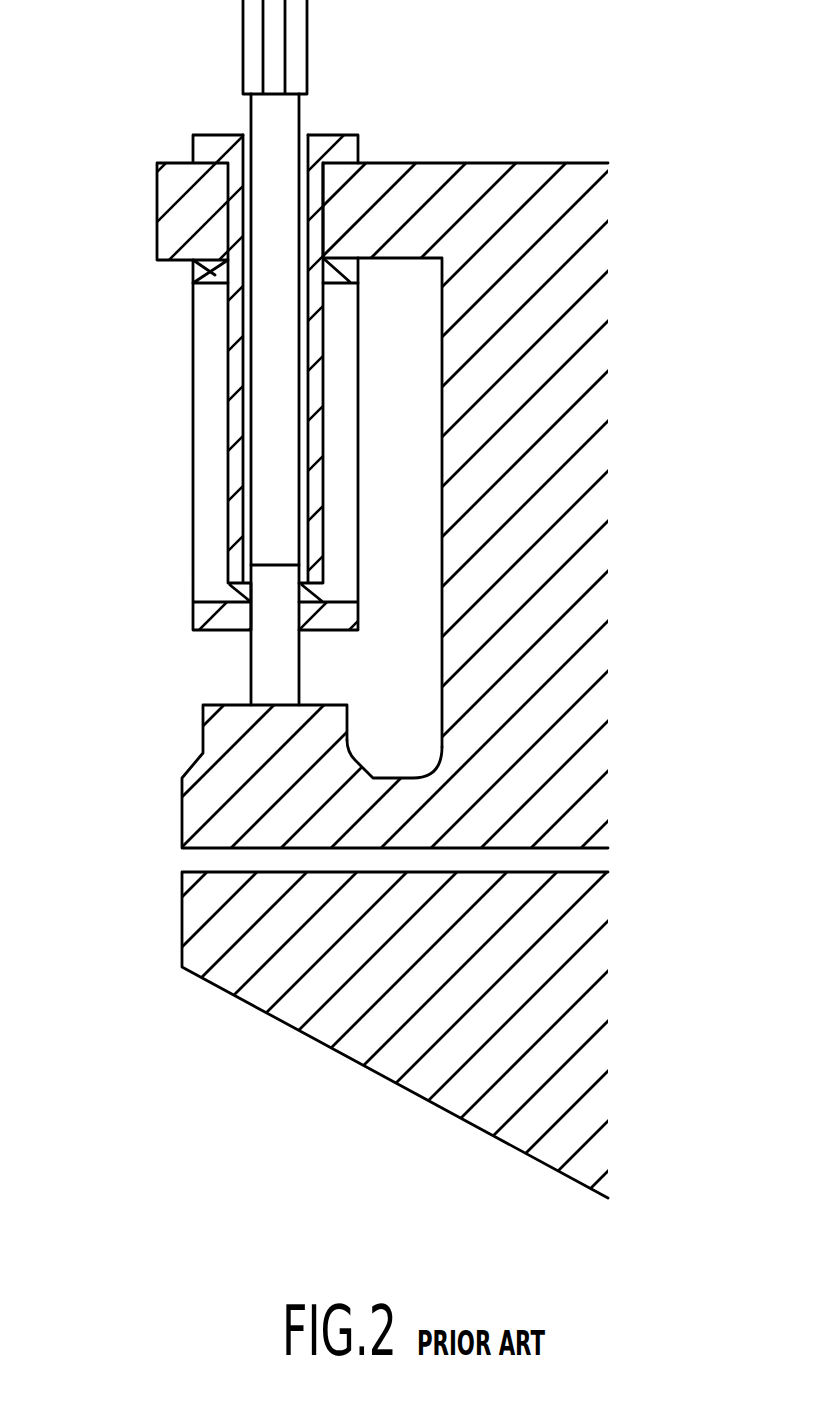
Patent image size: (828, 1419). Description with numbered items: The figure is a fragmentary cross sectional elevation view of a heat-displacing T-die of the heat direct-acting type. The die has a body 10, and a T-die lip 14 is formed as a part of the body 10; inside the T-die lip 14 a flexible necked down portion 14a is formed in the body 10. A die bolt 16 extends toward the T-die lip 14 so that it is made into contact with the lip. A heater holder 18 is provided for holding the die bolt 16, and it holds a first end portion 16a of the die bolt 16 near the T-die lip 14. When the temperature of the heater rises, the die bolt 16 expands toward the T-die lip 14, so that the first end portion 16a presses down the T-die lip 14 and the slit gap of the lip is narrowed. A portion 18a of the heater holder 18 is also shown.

The body 10 is at (562, 190).
The T-die lip 14 is at (203, 733).
The flexible necked down portion 14a is at (395, 778).
The die bolt 16 is at (299, 108).
The first end portion of the die bolt 16a is at (230, 586).
The heater holder 18 is at (193, 425).
The sleeve flange 18a is at (197, 283).